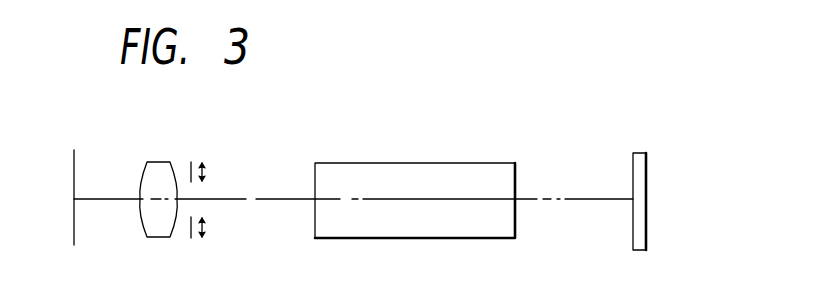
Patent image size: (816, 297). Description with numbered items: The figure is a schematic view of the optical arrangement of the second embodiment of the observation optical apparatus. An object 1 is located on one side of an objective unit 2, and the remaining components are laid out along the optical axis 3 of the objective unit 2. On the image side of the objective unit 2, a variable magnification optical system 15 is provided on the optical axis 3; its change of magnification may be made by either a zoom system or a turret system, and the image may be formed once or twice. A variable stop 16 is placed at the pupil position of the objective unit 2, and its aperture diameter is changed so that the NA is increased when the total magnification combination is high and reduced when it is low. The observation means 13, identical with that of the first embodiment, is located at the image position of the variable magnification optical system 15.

The object 1 is at (74, 157).
The objective unit 2 is at (157, 162).
The optical axis 3 is at (247, 202).
The observation means 13 is at (647, 170).
The variable magnification optical system 15 is at (407, 163).
The variable stop 16 is at (193, 162).